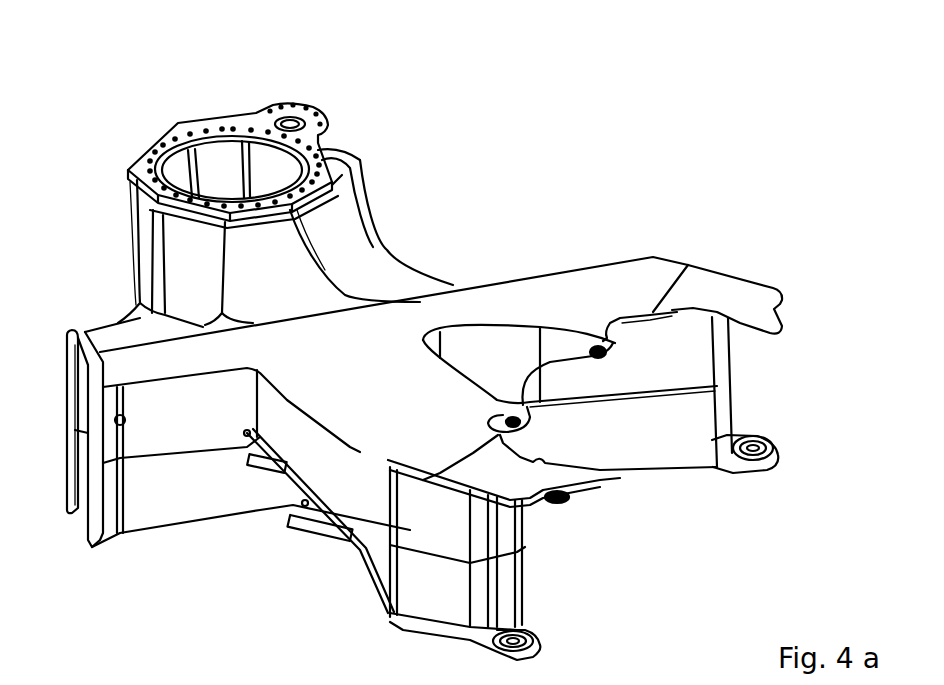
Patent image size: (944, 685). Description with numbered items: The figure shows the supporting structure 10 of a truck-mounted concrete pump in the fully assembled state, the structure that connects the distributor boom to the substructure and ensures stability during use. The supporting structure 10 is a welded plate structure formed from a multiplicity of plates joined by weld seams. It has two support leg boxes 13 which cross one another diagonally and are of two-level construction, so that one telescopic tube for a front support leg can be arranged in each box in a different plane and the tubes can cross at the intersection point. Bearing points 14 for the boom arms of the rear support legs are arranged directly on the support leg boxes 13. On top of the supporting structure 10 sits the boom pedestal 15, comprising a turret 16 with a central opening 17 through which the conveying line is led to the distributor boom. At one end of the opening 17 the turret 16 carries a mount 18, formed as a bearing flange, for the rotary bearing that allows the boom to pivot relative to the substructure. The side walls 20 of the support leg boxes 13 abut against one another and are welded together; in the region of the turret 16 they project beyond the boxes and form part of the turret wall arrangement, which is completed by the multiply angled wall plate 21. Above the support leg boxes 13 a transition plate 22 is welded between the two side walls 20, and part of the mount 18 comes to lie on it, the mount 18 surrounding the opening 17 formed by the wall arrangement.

The supporting structure 10 is at (424, 402).
The support leg boxes 13 is at (148, 532).
The bearing points 14 is at (763, 438).
The boom pedestal 15 is at (355, 120).
The turret 16 is at (133, 228).
The opening 17 is at (222, 172).
The mount 18 is at (143, 168).
The side walls 20 is at (270, 264).
The wall plate 21 is at (193, 255).
The transition plate 22 is at (320, 225).